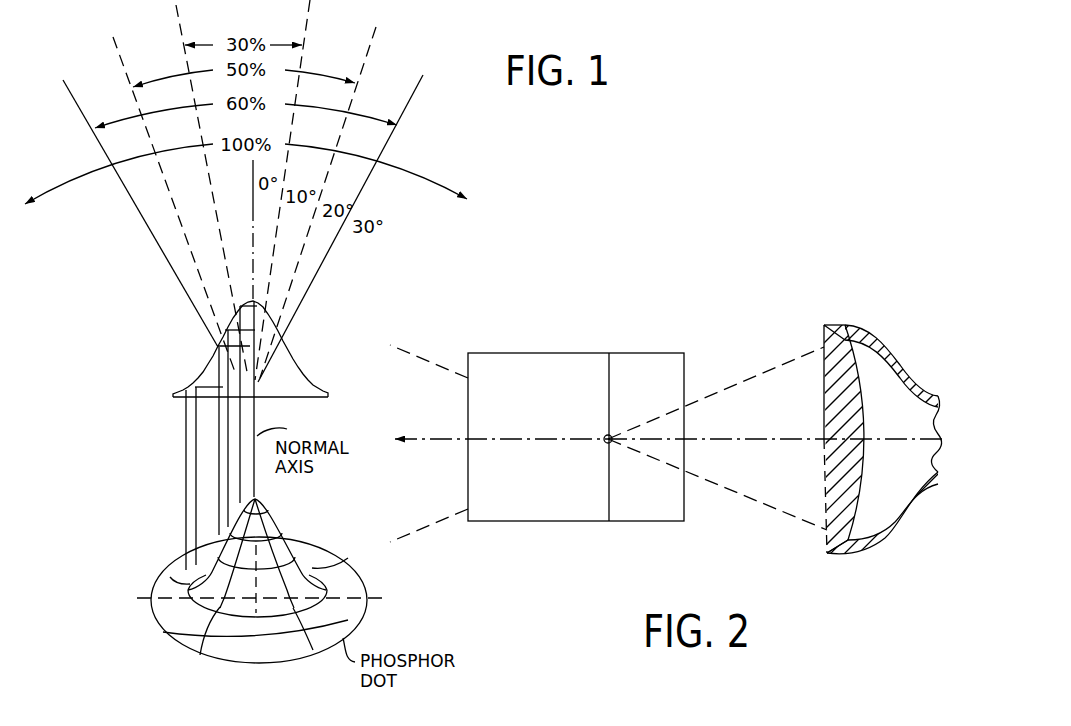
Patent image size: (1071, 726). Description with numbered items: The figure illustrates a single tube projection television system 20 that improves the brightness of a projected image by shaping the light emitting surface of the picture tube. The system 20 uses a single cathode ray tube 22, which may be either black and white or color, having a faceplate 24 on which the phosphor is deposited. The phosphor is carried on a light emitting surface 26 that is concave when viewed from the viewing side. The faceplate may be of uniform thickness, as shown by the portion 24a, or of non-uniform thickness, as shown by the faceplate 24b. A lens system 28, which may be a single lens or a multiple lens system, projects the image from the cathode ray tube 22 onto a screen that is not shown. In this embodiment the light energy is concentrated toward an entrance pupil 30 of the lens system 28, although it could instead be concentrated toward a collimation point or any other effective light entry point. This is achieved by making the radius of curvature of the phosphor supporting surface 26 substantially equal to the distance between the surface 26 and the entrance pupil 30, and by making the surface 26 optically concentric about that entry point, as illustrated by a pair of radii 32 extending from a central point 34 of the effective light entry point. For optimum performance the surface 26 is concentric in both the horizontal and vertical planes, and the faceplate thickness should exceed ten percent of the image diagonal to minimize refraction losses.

The projection television system 20 is at (733, 563).
The cathode ray tube 22 is at (892, 530).
The faceplate 24 is at (822, 408).
The uniform thickness faceplate portion 24a is at (837, 557).
The non-uniform thickness faceplate 24b is at (828, 355).
The light emitting surface 26 is at (857, 490).
The lens system 28 is at (563, 503).
The entrance pupil 30 is at (609, 510).
The radii 32 is at (743, 380).
The central point 34 is at (605, 436).